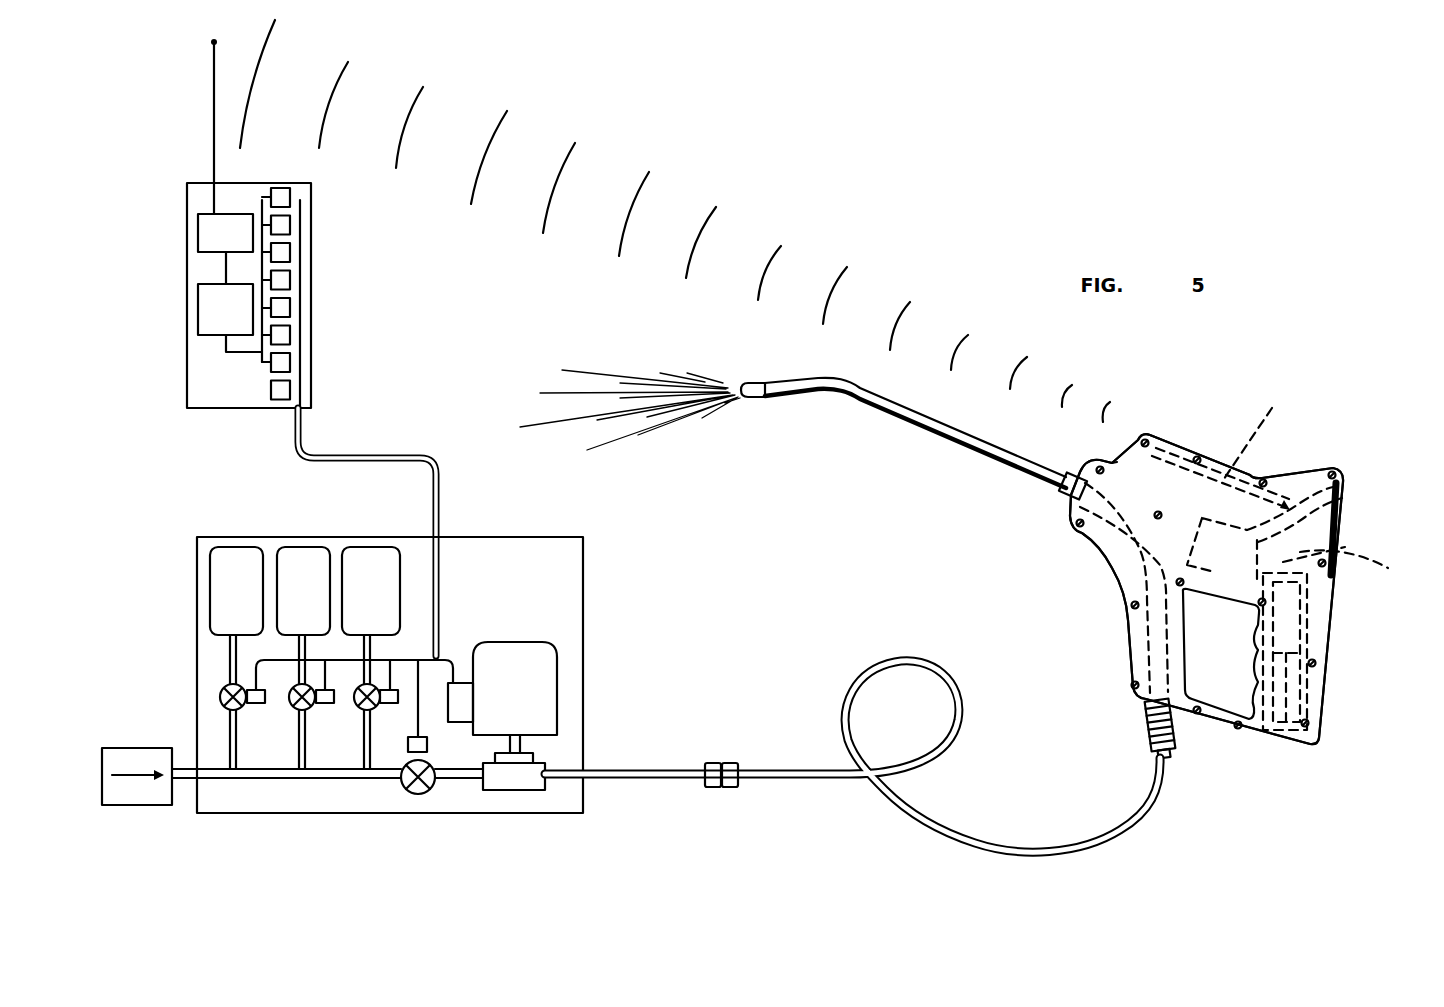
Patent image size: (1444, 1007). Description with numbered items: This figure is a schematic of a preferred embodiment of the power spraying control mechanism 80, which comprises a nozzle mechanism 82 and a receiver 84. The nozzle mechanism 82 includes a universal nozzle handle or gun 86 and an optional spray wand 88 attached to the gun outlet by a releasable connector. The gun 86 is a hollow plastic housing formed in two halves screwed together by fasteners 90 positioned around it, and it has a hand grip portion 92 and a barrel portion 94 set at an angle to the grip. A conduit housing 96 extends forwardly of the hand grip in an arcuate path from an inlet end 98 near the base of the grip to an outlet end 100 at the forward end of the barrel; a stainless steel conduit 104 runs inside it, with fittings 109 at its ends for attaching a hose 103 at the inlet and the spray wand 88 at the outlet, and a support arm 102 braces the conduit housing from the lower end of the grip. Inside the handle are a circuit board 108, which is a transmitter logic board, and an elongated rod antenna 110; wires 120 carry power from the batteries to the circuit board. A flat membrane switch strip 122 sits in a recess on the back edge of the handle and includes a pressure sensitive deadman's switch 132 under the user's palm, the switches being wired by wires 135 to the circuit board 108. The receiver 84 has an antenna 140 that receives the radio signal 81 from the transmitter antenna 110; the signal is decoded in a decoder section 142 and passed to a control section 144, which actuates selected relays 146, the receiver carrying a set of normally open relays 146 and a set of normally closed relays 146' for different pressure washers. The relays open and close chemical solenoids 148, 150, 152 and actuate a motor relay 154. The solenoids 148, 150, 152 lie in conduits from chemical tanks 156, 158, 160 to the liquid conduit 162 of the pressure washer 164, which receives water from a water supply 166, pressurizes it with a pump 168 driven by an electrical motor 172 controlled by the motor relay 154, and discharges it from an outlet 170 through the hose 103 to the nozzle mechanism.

The control mechanism 80 is at (855, 230).
The signal 81 is at (560, 172).
The nozzle mechanism 82 is at (1258, 400).
The receiver 84 is at (187, 373).
The gun 86 is at (1297, 483).
The spray wand 88 is at (1005, 452).
The fasteners 90 is at (1200, 460).
The hand grip portion 92 is at (1313, 635).
The barrel portion 94 is at (1112, 463).
The conduit housing 96 is at (1140, 652).
The inlet end 98 is at (1147, 712).
The outlet end 100 is at (1068, 495).
The support arm 102 is at (1217, 718).
The hose 103 is at (1118, 830).
The stainless steel conduit 104 is at (1133, 543).
The circuit board 108 is at (1220, 550).
The fittings 109 is at (1340, 466).
The antenna 110 is at (1268, 413).
The wires 120 is at (1376, 572).
The membrane switch strip 122 is at (1346, 490).
The deadman's switch 132 is at (1320, 693).
The wires 135 is at (1350, 543).
The antenna 140 is at (210, 110).
The decoder section 142 is at (213, 235).
The control section 144 is at (222, 312).
The relays 146 is at (344, 239).
The normally closed relays 146' is at (347, 349).
The chemical solenoid 148 is at (232, 688).
The chemical solenoid 150 is at (296, 704).
The chemical solenoid 152 is at (360, 704).
The motor relay 154 is at (465, 712).
The chemical tank 156 is at (232, 548).
The chemical tank 158 is at (302, 548).
The chemical tank 160 is at (373, 548).
The liquid conduit 162 is at (267, 785).
The pressure washer 164 is at (595, 568).
The water supply 166 is at (137, 810).
The pump 168 is at (545, 762).
The outlet 170 is at (607, 782).
The electrical motor 172 is at (543, 673).